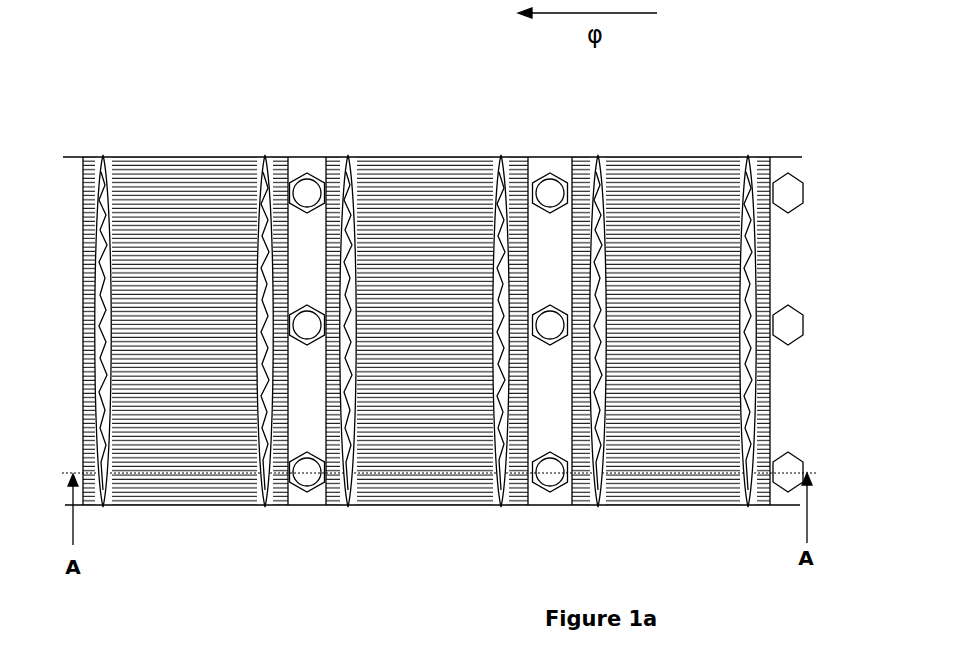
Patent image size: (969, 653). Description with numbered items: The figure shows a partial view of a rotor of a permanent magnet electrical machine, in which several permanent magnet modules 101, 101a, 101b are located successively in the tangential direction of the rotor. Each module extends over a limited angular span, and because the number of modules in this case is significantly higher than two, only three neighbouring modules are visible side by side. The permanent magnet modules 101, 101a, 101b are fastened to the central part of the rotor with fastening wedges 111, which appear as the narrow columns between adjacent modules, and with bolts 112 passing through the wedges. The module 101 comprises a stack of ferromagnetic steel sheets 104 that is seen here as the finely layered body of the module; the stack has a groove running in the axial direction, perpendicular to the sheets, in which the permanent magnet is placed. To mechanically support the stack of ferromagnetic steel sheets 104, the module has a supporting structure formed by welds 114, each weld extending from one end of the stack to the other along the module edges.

The permanent magnet module 101a is at (157, 126).
The permanent magnet module 101 is at (427, 279).
The permanent magnet module 101b is at (700, 123).
The stack of ferromagnetic steel sheets 104 is at (407, 346).
The fastening wedge 111 is at (293, 409).
The bolt 112 is at (305, 488).
The weld 114 is at (502, 157).